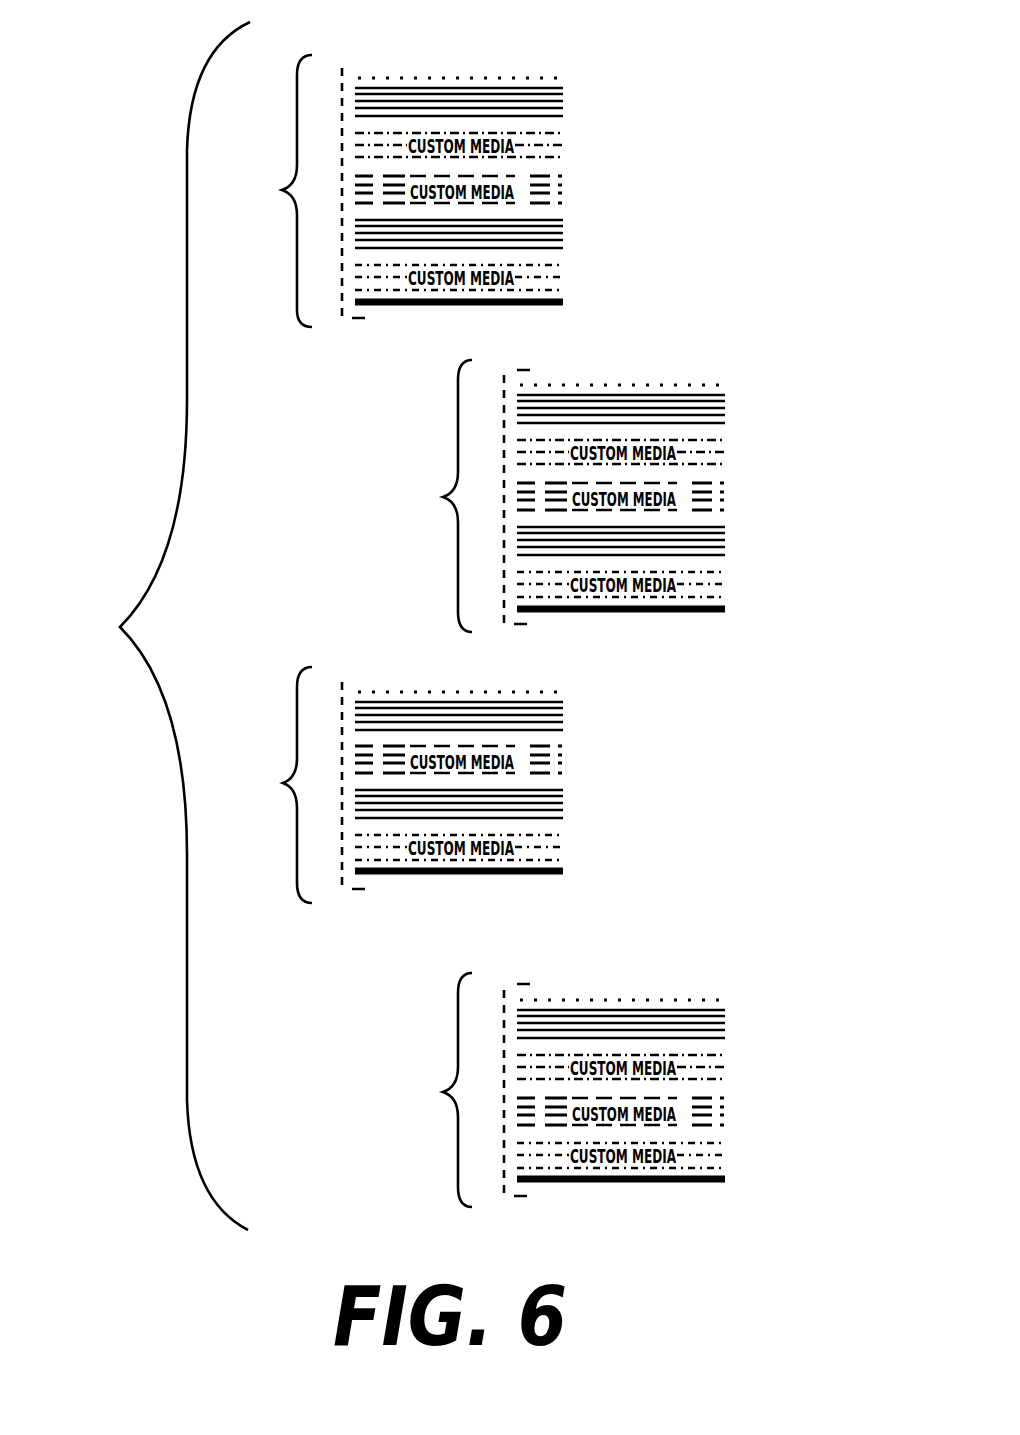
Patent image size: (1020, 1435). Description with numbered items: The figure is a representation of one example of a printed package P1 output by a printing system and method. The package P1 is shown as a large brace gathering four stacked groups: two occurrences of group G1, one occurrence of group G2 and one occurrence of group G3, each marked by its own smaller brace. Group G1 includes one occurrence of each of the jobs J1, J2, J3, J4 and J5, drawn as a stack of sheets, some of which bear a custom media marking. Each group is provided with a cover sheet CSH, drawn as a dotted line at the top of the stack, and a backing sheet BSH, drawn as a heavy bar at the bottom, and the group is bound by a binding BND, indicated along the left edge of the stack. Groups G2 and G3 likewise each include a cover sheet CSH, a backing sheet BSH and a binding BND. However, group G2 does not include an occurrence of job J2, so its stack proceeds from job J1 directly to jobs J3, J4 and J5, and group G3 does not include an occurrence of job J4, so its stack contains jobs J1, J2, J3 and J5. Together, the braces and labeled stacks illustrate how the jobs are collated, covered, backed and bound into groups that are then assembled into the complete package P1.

The package P1 is at (160, 626).
The group G1 is at (350, 343).
The group G2 is at (270, 785).
The group G3 is at (430, 1090).
The binding BND is at (357, 677).
The cover sheet CSH is at (678, 1000).
The backing sheet BSH is at (713, 1207).
The job J1 is at (564, 564).
The job J2 is at (564, 606).
The job J3 is at (564, 651).
The job J4 is at (564, 520).
The job J5 is at (564, 717).